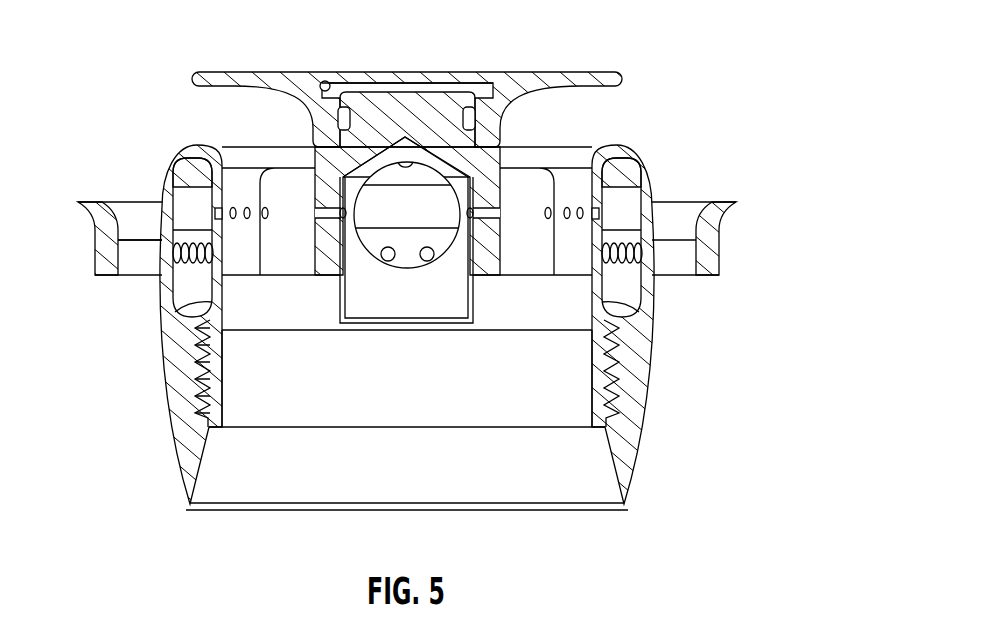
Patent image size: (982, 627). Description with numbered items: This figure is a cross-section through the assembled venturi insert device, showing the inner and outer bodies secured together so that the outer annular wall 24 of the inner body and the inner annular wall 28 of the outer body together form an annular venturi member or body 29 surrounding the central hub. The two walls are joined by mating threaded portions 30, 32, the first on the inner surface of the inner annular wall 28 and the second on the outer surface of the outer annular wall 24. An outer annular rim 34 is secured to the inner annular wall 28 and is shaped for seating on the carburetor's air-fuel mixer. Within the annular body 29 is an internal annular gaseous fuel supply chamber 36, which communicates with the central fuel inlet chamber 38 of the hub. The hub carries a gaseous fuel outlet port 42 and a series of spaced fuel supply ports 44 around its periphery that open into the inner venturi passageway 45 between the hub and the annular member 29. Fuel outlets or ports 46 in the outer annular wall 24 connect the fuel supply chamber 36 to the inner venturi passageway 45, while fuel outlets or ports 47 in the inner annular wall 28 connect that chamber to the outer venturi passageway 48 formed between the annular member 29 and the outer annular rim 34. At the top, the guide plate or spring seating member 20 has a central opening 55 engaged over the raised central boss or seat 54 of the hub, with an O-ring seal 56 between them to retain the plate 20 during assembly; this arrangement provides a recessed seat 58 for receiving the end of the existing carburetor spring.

The guide plate or spring seating member 20 is at (590, 86).
The outer annular wall 24 is at (163, 333).
The inner annular wall 28 is at (173, 353).
The annular venturi member or body 29 is at (661, 150).
The threaded portion 30 is at (197, 387).
The threaded portion 32 is at (155, 381).
The outer annular rim 34 is at (105, 245).
The annular gaseous fuel supply chamber 36 is at (195, 207).
The central fuel inlet chamber 38 is at (457, 302).
The gaseous fuel outlet port 42 is at (398, 146).
The fuel supply ports 44 is at (340, 220).
The inner venturi passageway 45 is at (274, 172).
The fuel outlets or ports 46 is at (250, 222).
The fuel outlets or ports 47 is at (622, 262).
The outer venturi passageway 48 is at (136, 210).
The raised central boss or seat 54 is at (385, 103).
The central opening 55 is at (323, 81).
The O-ring seal 56 is at (340, 114).
The recessed seat 58 is at (402, 90).